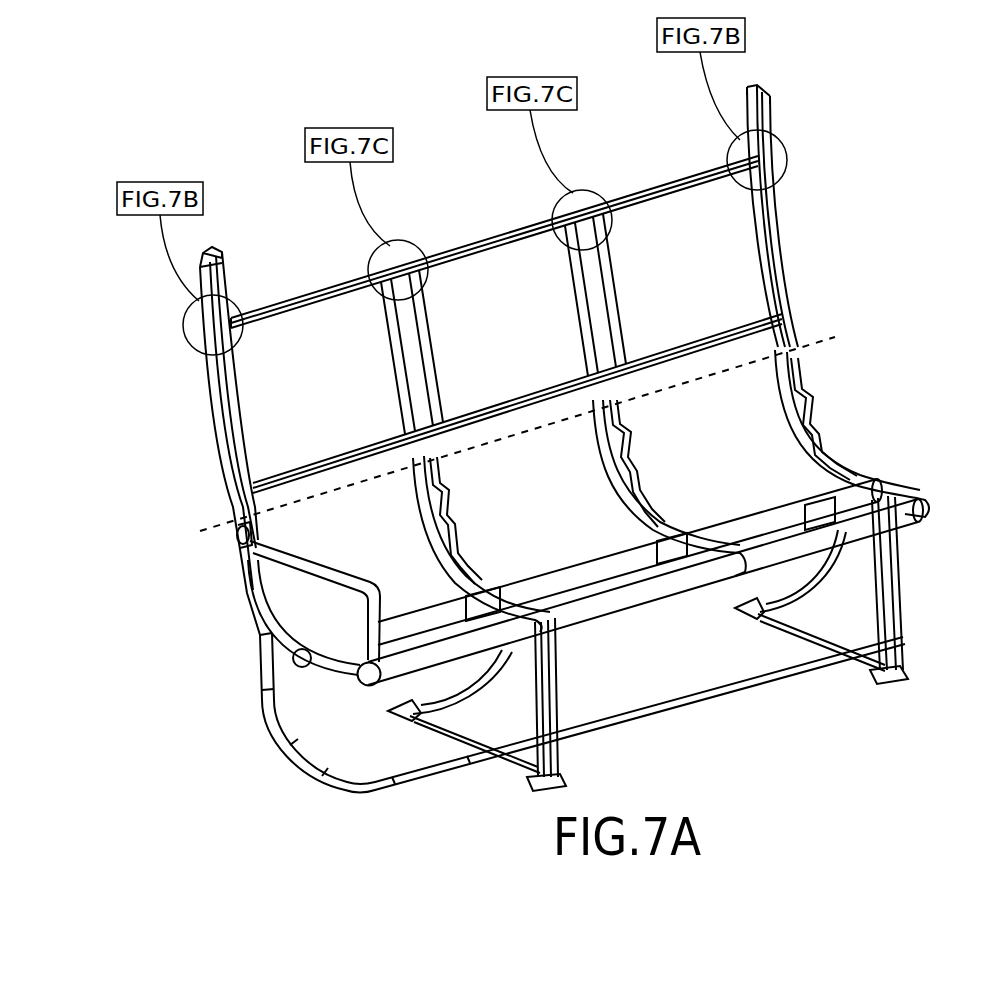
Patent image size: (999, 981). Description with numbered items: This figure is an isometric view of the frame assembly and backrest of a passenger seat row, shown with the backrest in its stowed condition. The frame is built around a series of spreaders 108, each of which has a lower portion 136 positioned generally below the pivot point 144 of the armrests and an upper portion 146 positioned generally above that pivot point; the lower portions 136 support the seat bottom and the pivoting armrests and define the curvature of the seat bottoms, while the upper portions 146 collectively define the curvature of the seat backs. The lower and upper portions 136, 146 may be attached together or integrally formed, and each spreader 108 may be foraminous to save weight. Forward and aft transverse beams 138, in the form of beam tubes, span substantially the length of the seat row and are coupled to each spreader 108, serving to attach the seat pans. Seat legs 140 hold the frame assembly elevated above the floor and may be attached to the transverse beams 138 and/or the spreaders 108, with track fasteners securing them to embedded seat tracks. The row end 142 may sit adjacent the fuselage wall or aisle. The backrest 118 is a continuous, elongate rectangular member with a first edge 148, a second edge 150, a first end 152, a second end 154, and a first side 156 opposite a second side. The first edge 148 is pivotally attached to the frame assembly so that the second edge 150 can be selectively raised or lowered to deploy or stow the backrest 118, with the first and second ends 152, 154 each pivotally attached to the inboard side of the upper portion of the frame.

The spreader 108 is at (812, 437).
The backrest 118 is at (489, 263).
The lower portion 136 is at (893, 487).
The transverse beam 138 is at (590, 563).
The seat leg 140 is at (895, 585).
The row end 142 is at (313, 676).
The pivot point 144 is at (820, 337).
The upper portion 146 is at (792, 222).
The first edge 148 is at (312, 294).
The second edge 150 is at (237, 541).
The first end 152 is at (228, 412).
The second end 154 is at (774, 195).
The first side 156 is at (679, 216).